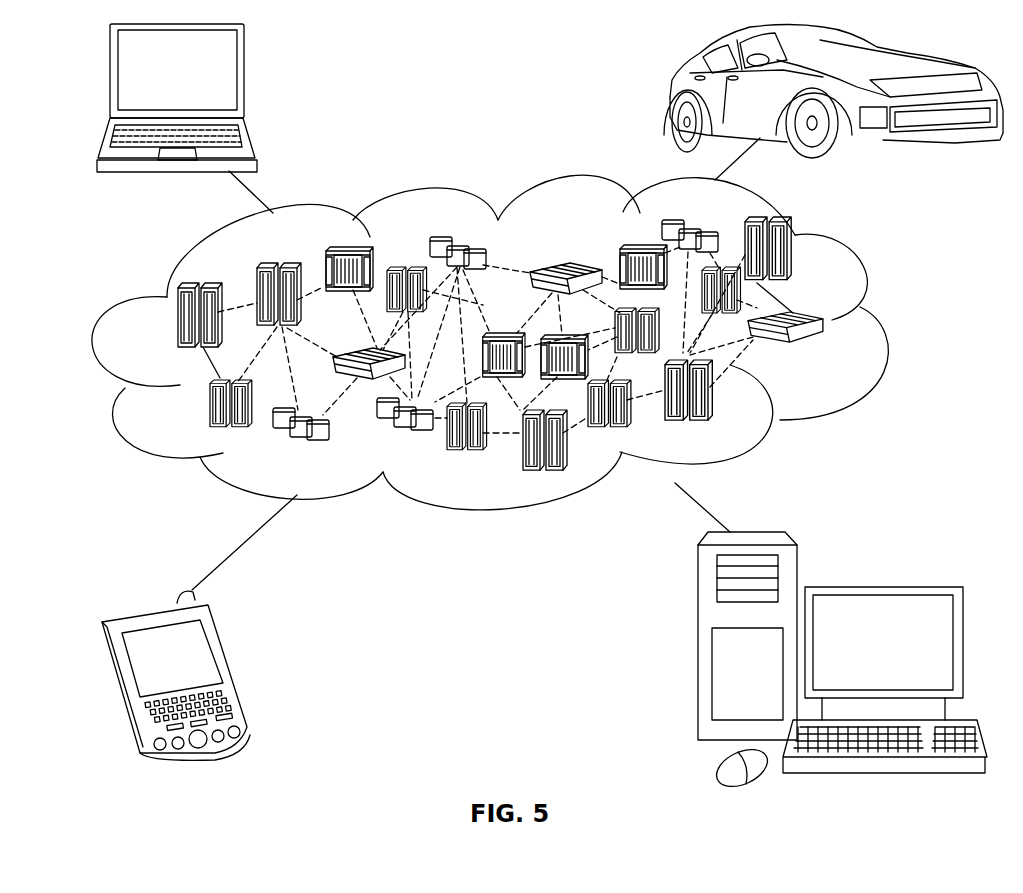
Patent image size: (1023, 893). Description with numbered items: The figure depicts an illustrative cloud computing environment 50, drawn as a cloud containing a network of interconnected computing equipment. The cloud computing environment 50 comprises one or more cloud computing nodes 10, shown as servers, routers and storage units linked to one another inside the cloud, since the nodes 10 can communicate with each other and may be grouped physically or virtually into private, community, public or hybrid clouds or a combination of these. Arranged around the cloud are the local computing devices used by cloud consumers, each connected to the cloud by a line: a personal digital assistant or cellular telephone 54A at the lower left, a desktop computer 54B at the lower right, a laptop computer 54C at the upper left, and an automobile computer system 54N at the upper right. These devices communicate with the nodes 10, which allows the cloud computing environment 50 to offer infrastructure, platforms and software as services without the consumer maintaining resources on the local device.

The cloud computing environment 50 is at (883, 323).
The cloud computing node 10 is at (834, 353).
The personal digital assistant or cellular telephone 54A is at (234, 668).
The desktop computer 54B is at (883, 583).
The laptop computer 54C is at (245, 78).
The automobile computer system 54N is at (670, 88).